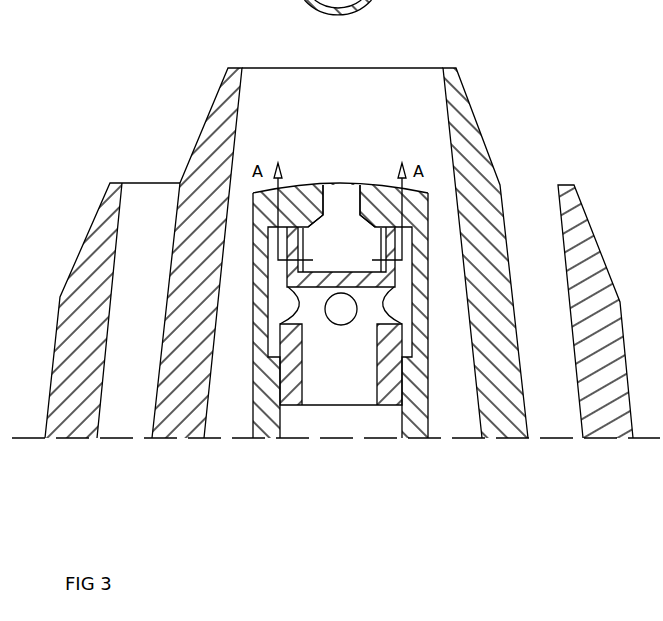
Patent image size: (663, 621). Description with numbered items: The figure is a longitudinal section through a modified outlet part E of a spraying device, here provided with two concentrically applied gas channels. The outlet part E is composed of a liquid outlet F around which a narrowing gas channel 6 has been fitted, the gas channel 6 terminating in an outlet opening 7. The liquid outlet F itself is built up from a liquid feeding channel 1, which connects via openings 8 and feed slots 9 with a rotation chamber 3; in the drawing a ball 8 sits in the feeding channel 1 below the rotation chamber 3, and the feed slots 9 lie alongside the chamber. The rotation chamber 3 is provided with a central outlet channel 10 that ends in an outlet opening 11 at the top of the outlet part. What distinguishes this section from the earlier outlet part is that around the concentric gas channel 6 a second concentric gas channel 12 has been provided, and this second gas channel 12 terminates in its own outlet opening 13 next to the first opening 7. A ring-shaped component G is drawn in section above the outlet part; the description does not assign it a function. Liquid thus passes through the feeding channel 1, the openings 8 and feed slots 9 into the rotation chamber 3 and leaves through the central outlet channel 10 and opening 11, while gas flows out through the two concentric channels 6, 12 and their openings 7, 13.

The outlet part of the spraying device E is at (178, 408).
The liquid outlet F is at (267, 395).
The connection ring G is at (403, 68).
The liquid feeding channel 1 is at (317, 395).
The rotation chamber 3 is at (368, 242).
The narrowing gas channel 6 is at (455, 393).
The outlet opening 7 is at (441, 202).
The openings 8 is at (345, 314).
The feed slots 9 is at (303, 227).
The central outlet channel 10 is at (347, 203).
The outlet opening 11 is at (333, 175).
The second concentric gas channel 12 is at (550, 315).
The outlet opening 13 is at (528, 198).